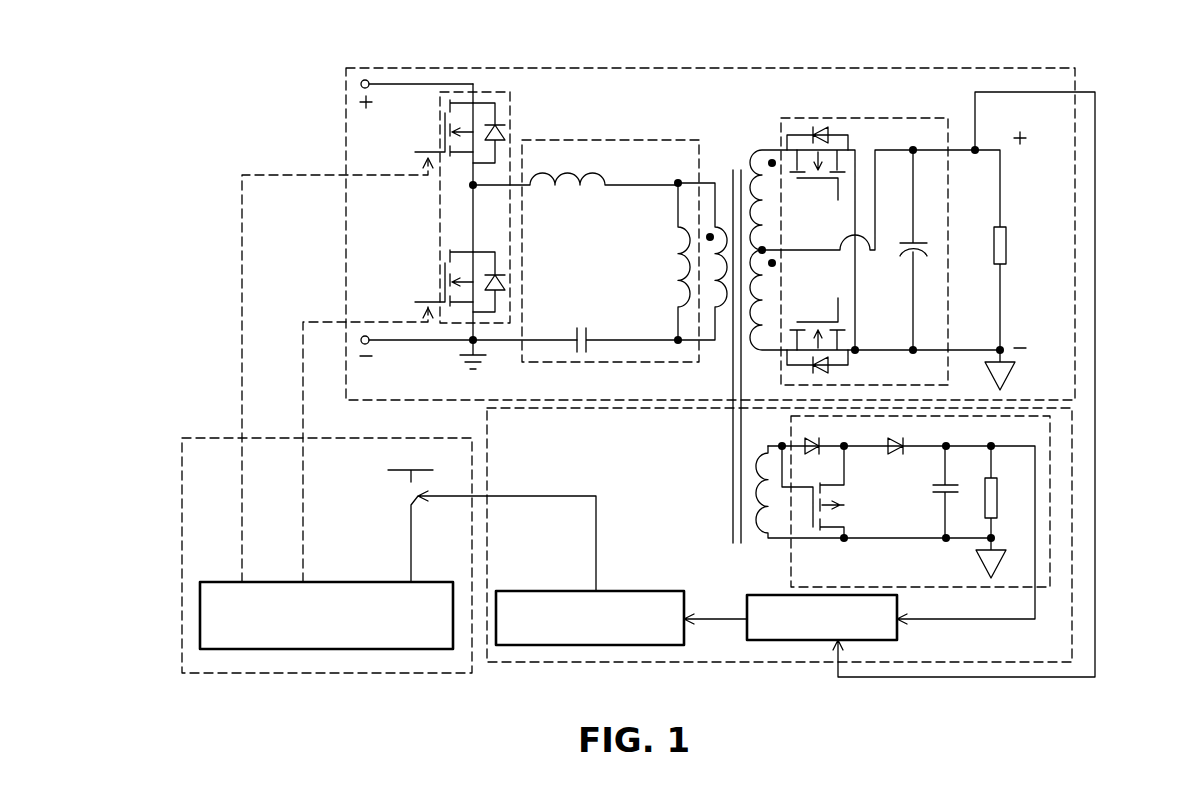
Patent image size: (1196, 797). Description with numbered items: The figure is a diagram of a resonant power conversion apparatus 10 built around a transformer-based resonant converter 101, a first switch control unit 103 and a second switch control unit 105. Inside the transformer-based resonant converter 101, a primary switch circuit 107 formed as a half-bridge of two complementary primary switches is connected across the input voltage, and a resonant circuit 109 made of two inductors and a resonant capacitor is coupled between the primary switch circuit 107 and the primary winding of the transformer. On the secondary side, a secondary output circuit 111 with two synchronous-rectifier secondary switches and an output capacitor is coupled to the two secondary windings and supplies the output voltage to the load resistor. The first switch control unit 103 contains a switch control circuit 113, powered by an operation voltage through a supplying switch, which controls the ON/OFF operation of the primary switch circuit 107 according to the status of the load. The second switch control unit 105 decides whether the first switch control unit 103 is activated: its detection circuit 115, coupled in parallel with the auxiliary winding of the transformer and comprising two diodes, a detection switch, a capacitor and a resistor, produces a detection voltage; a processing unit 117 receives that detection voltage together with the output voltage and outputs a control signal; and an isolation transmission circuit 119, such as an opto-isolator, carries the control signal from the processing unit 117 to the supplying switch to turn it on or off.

The resonant power conversion apparatus 10 is at (1152, 703).
The transformer-based resonant converter 101 is at (638, 66).
The first switch control unit 103 is at (199, 435).
The second switch control unit 105 is at (527, 665).
The primary switch circuit 107 is at (512, 112).
The resonant circuit 109 is at (637, 139).
The secondary output circuit 111 is at (858, 117).
The switch control circuit 113 is at (353, 581).
The detection circuit 115 is at (790, 578).
The processing unit 117 is at (899, 628).
The isolation transmission circuit 119 is at (648, 590).